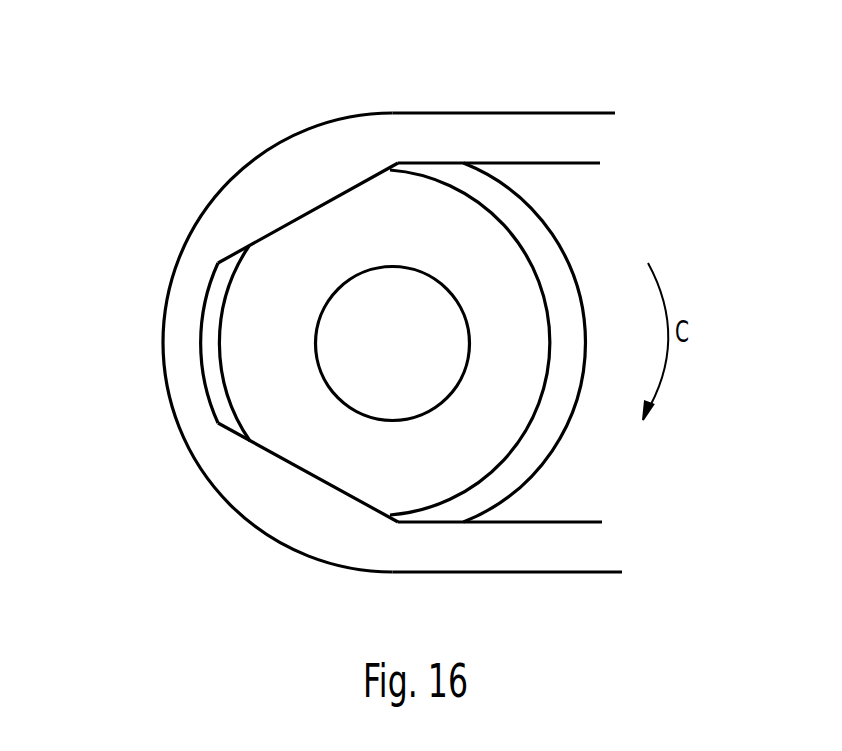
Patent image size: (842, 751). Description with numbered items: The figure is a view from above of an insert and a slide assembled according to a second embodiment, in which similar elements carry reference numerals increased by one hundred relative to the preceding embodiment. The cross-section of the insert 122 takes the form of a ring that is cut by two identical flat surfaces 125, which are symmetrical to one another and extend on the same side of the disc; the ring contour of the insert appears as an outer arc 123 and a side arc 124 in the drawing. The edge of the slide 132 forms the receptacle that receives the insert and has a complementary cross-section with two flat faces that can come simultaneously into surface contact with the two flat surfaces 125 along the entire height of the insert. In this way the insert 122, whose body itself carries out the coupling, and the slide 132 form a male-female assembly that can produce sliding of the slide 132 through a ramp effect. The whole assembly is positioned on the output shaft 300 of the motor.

The insert 122 is at (510, 290).
The outer contour of ring 123 is at (515, 220).
The arc-shaped side section 124 is at (219, 343).
The flat surfaces 125 is at (340, 195).
The slide 132 is at (263, 197).
The output shaft 300 is at (423, 363).